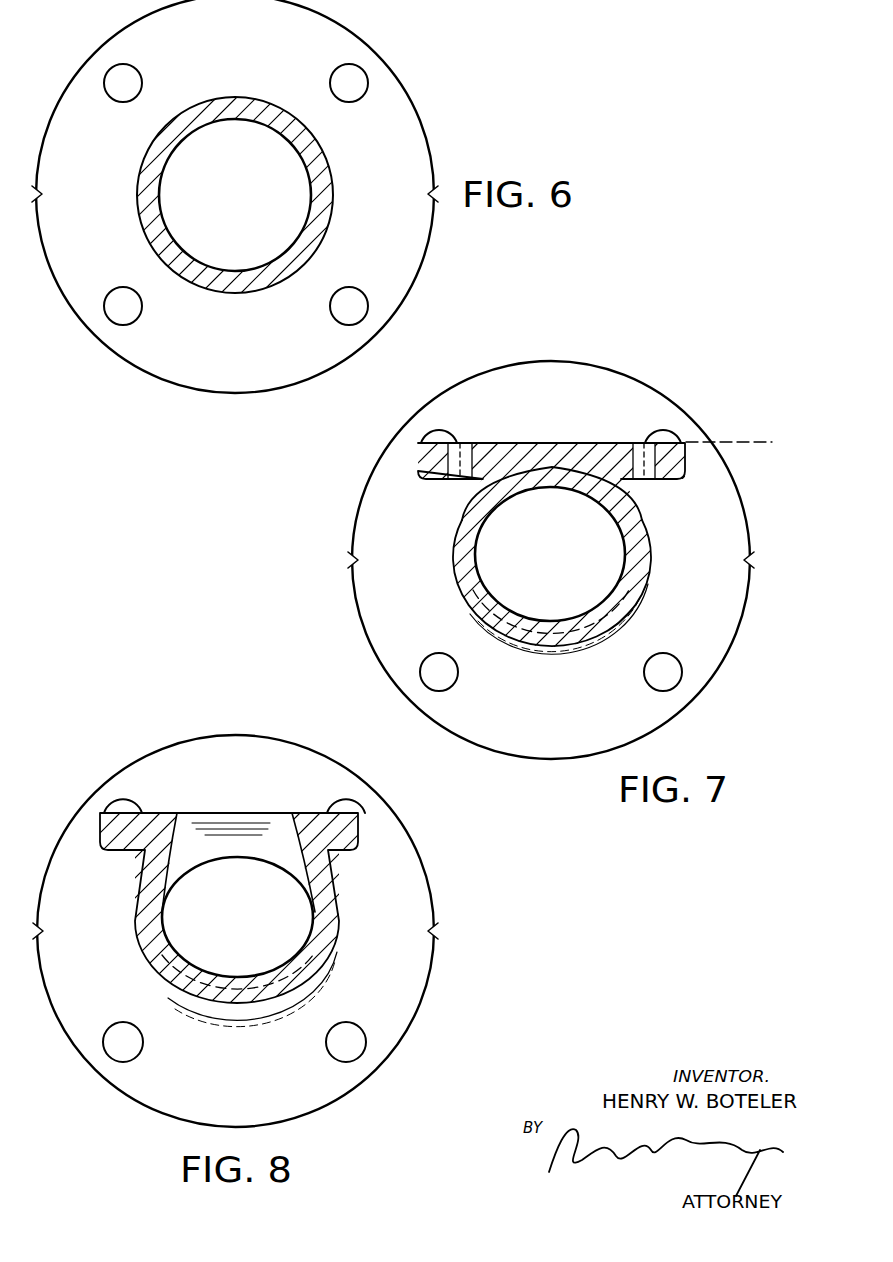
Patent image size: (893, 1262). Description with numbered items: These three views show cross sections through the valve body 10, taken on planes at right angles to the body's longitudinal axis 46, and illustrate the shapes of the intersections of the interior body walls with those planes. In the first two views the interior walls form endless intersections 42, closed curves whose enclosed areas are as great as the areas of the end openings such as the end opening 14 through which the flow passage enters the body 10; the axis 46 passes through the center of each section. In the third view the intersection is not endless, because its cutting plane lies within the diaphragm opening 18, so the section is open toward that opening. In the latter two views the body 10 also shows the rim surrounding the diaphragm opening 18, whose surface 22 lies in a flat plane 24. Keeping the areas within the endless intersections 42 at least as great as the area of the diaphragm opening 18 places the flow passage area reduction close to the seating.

In FIG. 6, the body 10 is at (222, 318).
In FIG. 7, the body 10 is at (514, 663).
In FIG. 8, the body 10 is at (339, 978).
In FIG. 6, the end opening 14 is at (178, 247).
In FIG. 7, the end opening 14 is at (588, 495).
In FIG. 8, the end opening 14 is at (268, 862).
In FIG. 8, the diaphragm opening 18 is at (268, 820).
In FIG. 7, the surface 22 is at (607, 443).
In FIG. 7, the flat plane 24 is at (761, 442).
In FIG. 6, the endless intersection 42 is at (162, 177).
In FIG. 7, the endless intersection 42 is at (612, 503).
In FIG. 6, the longitudinal axis 46 is at (235, 193).
In FIG. 7, the longitudinal axis 46 is at (550, 560).
In FIG. 8, the longitudinal axis 46 is at (232, 928).